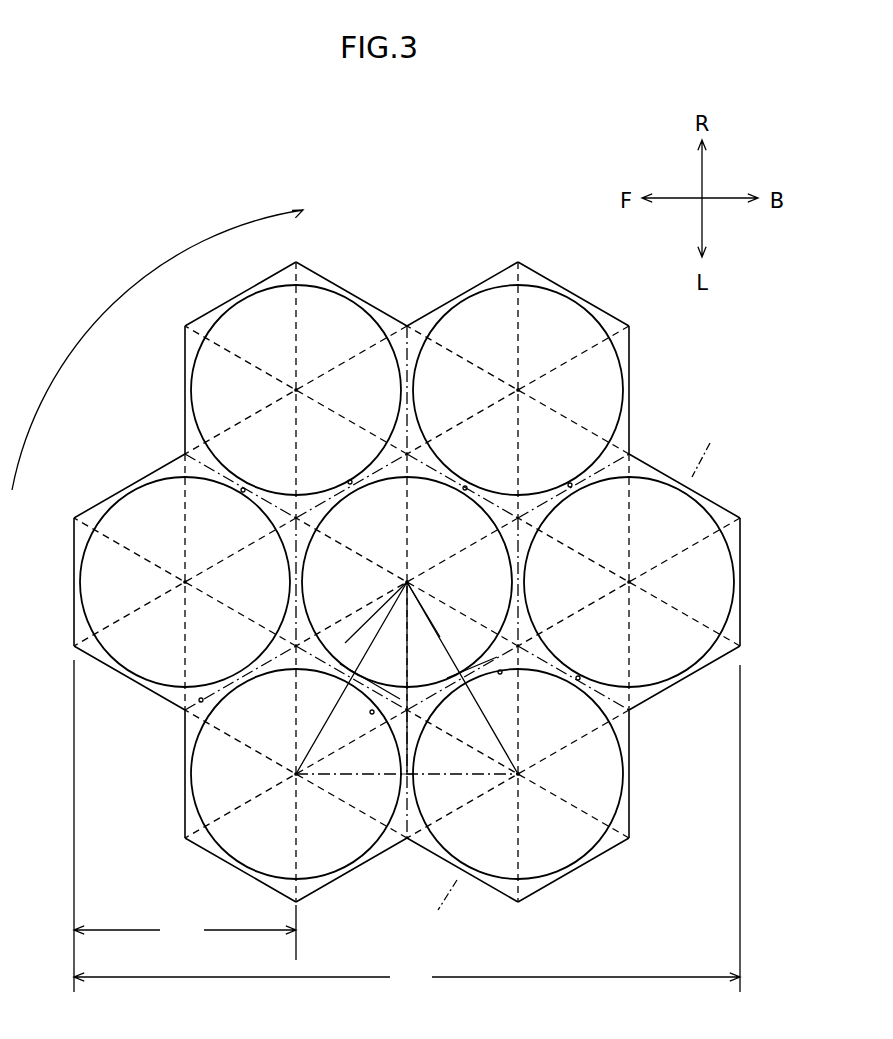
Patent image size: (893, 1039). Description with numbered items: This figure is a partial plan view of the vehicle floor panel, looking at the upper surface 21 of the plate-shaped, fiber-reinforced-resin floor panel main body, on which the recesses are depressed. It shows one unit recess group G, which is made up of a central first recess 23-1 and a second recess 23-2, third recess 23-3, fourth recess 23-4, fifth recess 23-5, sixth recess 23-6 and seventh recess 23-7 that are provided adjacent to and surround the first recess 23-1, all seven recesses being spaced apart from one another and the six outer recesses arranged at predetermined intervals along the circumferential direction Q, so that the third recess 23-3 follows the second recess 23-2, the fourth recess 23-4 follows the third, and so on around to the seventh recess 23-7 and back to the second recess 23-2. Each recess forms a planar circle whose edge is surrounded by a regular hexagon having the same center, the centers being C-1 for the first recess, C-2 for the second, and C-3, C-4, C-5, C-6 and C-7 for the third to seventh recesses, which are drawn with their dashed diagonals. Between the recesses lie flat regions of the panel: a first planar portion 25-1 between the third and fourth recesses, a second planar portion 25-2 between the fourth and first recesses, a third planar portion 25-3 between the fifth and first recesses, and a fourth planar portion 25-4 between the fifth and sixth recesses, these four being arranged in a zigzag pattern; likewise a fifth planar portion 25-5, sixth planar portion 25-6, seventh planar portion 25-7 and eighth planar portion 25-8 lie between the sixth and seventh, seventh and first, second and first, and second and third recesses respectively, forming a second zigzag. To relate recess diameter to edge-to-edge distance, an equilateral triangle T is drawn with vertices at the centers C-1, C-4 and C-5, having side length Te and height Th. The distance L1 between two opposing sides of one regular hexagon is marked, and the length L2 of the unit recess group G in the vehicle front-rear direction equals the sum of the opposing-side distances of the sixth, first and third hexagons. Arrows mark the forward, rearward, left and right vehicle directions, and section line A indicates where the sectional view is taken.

The upper surface 21 is at (525, 168).
The first recess 23-1 is at (337, 575).
The second recess 23-2 is at (594, 378).
The third recess 23-3 is at (673, 638).
The fourth recess 23-4 is at (597, 787).
The fifth recess 23-5 is at (214, 789).
The sixth recess 23-6 is at (128, 645).
The seventh recess 23-7 is at (219, 397).
The first planar portion 25-1 is at (580, 680).
The second planar portion 25-2 is at (500, 673).
The third planar portion 25-3 is at (372, 712).
The fourth planar portion 25-4 is at (200, 703).
The fifth planar portion 25-5 is at (240, 487).
The sixth planar portion 25-6 is at (350, 477).
The seventh planar portion 25-7 is at (470, 485).
The eighth planar portion 25-8 is at (573, 482).
The center of first recess C-1 is at (407, 582).
The center of second recess C-2 is at (518, 390).
The center of third recess C-3 is at (629, 582).
The center of fourth recess C-4 is at (518, 774).
The center of fifth recess C-5 is at (296, 774).
The center of sixth recess C-6 is at (185, 582).
The center of seventh recess C-7 is at (296, 390).
The equilateral triangle T is at (458, 778).
The side length of equilateral triangle Te is at (371, 679).
The height of equilateral triangle Th is at (416, 684).
The section line A- A is at (449, 907).
The unit recess group G is at (348, 236).
The circumferential direction Q is at (170, 344).
The distance between two opposing sides of regular hexagon L1 is at (185, 826).
The length of unit recess group in vehicle front-rear direction L2 is at (407, 830).